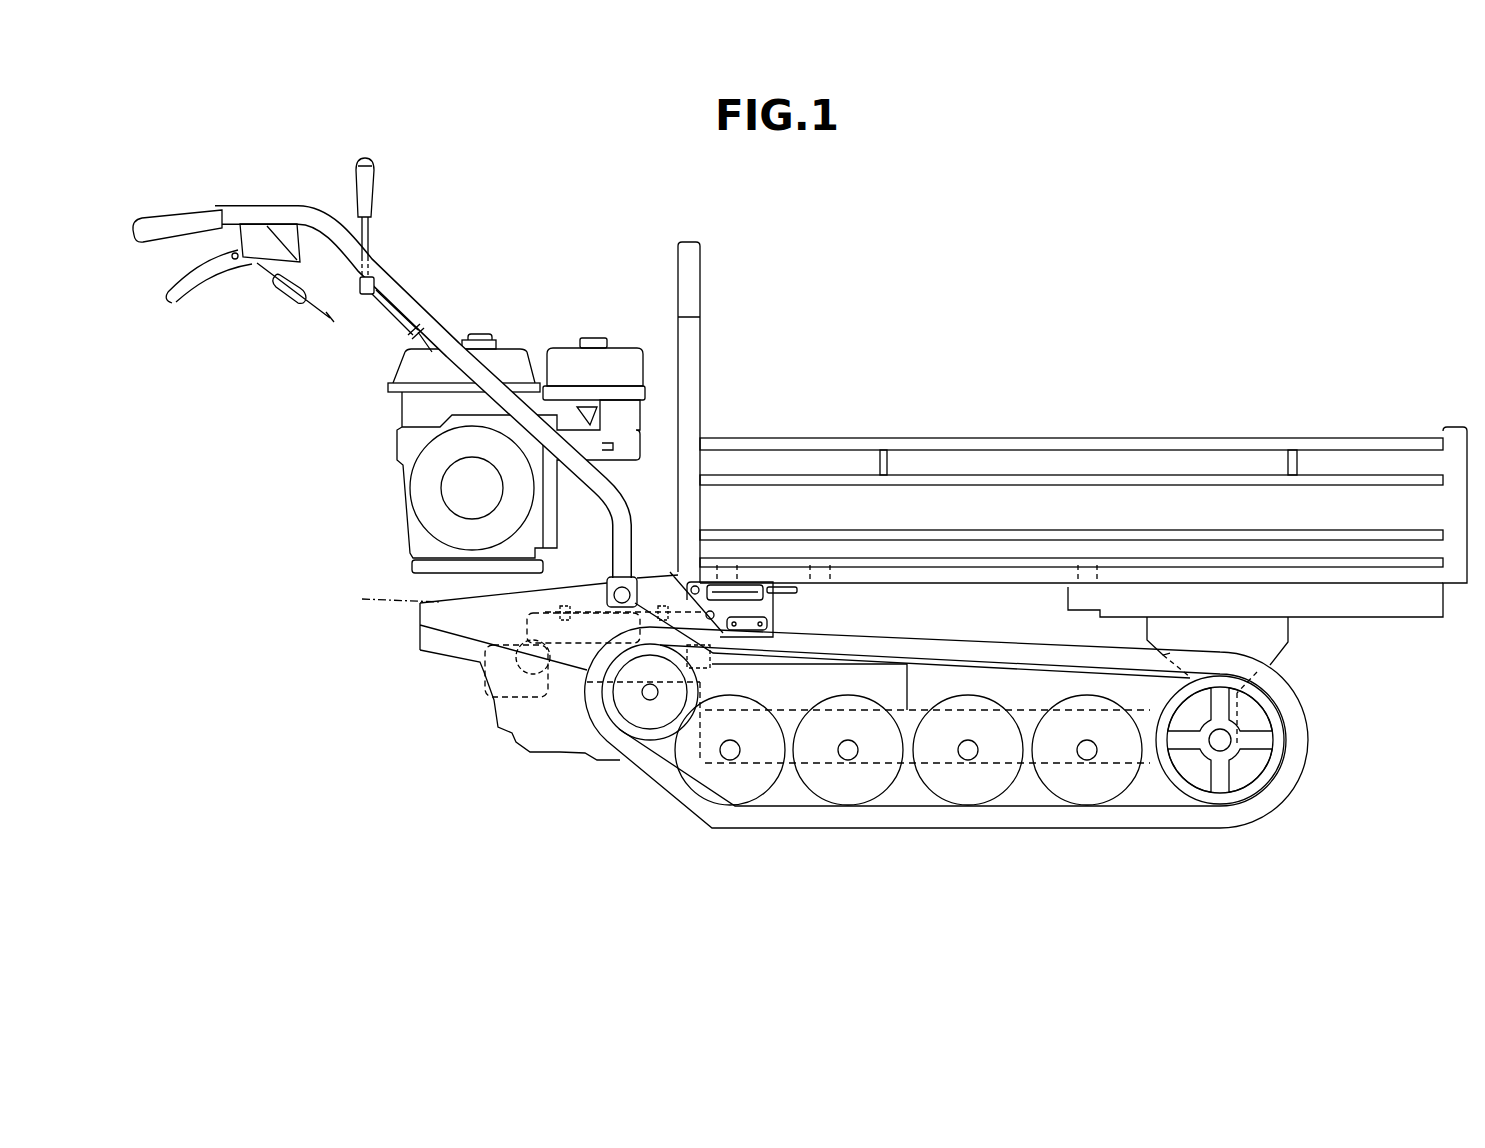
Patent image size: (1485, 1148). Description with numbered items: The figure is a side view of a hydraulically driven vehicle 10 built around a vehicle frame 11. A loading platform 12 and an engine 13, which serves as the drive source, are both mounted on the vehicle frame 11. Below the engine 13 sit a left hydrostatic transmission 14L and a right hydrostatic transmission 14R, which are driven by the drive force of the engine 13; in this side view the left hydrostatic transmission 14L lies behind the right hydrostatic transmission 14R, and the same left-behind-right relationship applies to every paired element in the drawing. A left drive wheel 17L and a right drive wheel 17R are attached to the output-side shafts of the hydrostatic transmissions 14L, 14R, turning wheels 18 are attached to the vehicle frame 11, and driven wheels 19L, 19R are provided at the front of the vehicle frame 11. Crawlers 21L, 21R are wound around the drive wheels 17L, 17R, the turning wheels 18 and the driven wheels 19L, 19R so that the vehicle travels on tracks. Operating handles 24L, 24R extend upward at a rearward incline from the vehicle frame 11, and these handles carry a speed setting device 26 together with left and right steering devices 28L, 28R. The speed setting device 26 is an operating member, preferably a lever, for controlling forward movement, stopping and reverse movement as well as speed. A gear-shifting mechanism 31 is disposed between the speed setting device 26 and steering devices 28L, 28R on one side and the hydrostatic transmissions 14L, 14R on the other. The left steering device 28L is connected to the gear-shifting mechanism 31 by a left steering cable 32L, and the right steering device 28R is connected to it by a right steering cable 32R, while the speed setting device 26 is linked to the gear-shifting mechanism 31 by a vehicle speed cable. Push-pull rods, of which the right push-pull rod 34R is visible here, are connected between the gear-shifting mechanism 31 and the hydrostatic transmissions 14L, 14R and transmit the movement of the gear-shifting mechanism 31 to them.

The hydraulically driven vehicle 10 is at (937, 162).
The vehicle frame 11 is at (783, 782).
The loading platform 12 is at (1115, 500).
The engine 13 is at (553, 330).
The left hydrostatic transmission 14L is at (510, 681).
The right hydrostatic transmission 14R is at (512, 705).
The left drive wheel 17L is at (585, 743).
The right drive wheel 17R is at (637, 710).
The turning wheels 18 is at (730, 788).
The left driven wheel 19L is at (1204, 775).
The right driven wheel 19R is at (1213, 800).
The left crawler 21L is at (1003, 761).
The right crawler 21R is at (1267, 802).
The left operating handle 24L is at (385, 359).
The right operating handle 24R is at (289, 206).
The speed setting device 26 is at (366, 160).
The left steering device 28L is at (176, 323).
The right steering device 28R is at (170, 300).
The gear-shifting mechanism 31 is at (750, 578).
The left steering cable 32L is at (302, 345).
The right steering cable 32R is at (316, 318).
The right push-pull rod 34R is at (367, 599).